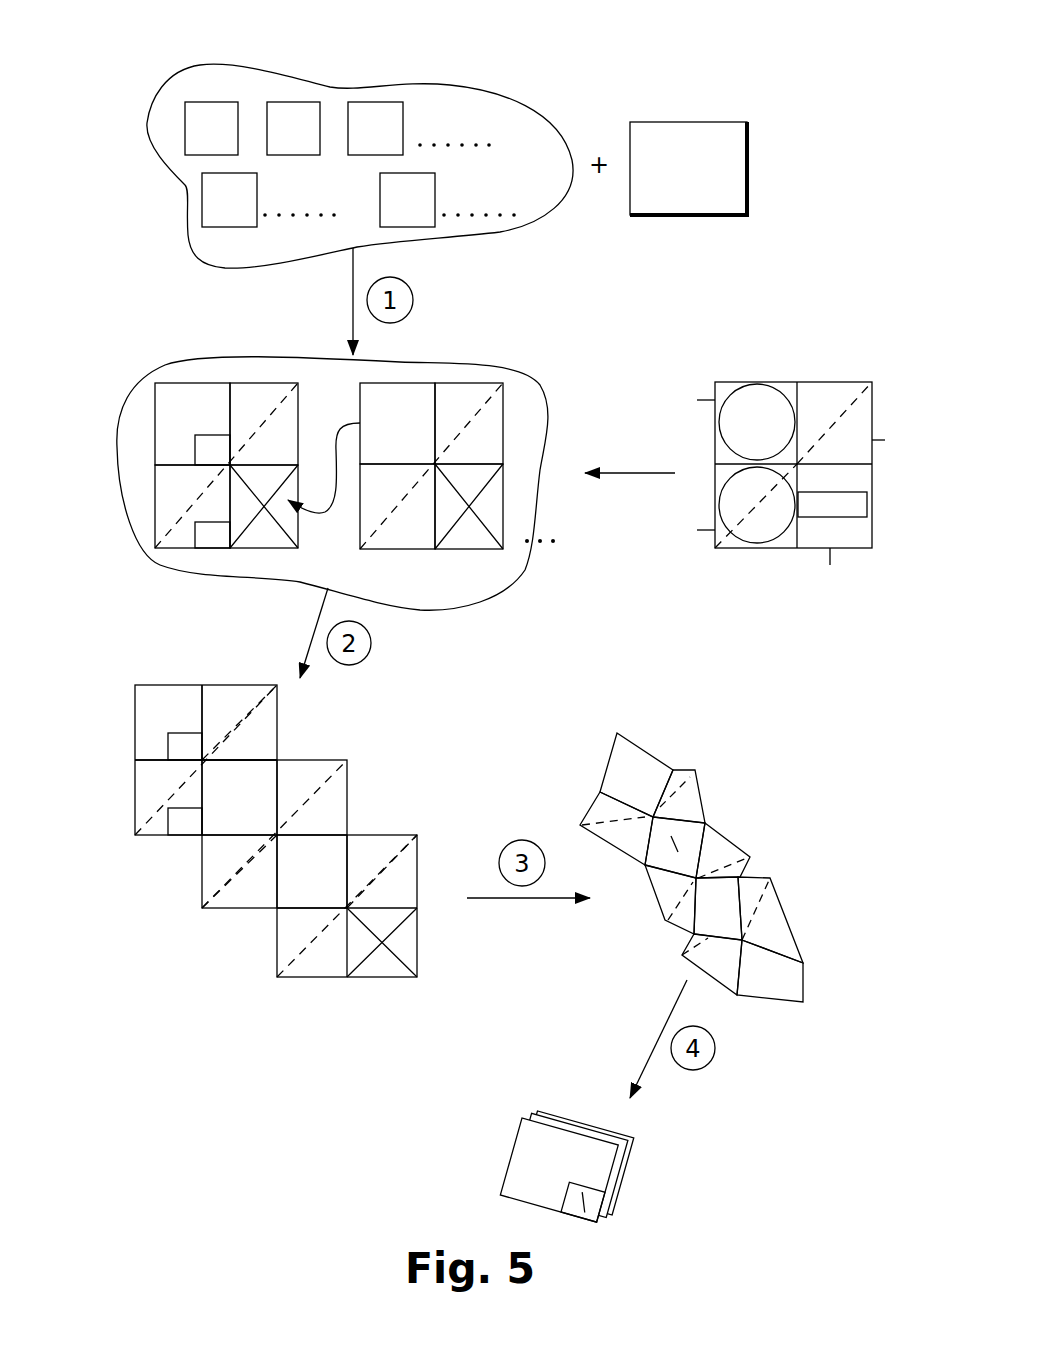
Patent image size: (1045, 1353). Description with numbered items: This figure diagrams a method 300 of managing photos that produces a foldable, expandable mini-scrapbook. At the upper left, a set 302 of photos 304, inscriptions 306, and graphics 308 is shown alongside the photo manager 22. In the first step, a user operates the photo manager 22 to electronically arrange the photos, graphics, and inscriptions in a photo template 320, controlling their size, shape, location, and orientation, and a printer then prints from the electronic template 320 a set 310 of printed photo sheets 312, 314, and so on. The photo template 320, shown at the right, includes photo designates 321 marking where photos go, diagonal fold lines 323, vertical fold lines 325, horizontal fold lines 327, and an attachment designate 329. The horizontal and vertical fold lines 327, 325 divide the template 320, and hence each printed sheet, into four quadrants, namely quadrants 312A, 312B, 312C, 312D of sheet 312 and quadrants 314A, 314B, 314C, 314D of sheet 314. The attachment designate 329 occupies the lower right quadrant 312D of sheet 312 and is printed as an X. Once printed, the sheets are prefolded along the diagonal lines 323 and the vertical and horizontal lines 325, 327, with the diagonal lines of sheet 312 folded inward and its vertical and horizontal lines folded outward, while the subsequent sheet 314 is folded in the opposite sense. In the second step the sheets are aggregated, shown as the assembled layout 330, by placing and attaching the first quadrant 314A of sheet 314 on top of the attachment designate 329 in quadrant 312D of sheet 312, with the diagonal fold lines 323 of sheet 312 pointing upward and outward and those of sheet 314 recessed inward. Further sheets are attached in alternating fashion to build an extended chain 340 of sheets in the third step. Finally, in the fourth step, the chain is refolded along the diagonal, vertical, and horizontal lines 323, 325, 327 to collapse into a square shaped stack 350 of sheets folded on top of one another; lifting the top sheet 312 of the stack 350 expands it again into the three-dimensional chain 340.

The method 300 is at (589, 92).
The set of photos, inscriptions, and/or graphics 302 is at (427, 83).
The photos 304 is at (395, 102).
The inscriptions 306 is at (222, 227).
The graphics 308 is at (420, 227).
The photo manager 22 is at (700, 122).
The set of printed photo sheets 310 is at (173, 365).
The photo sheet 312 is at (383, 768).
The quadrant 312A is at (155, 417).
The quadrant 312B is at (300, 427).
The quadrant 312C is at (155, 502).
The quadrant 312D is at (260, 548).
The photo sheet 314 is at (506, 766).
The quadrant 314A is at (400, 383).
The quadrant 314B is at (503, 420).
The quadrant 314C is at (398, 549).
The quadrant 314D is at (473, 549).
The photo template 320 is at (760, 382).
The photo designates 321 is at (730, 395).
The diagonal fold lines 323 is at (847, 406).
The vertical fold lines 325 is at (798, 400).
The horizontal fold lines 327 is at (840, 465).
The attachment designate 329 is at (847, 517).
The assembled page layout 330 is at (102, 762).
The extended chain 340 is at (705, 793).
The stack 350 is at (622, 1173).